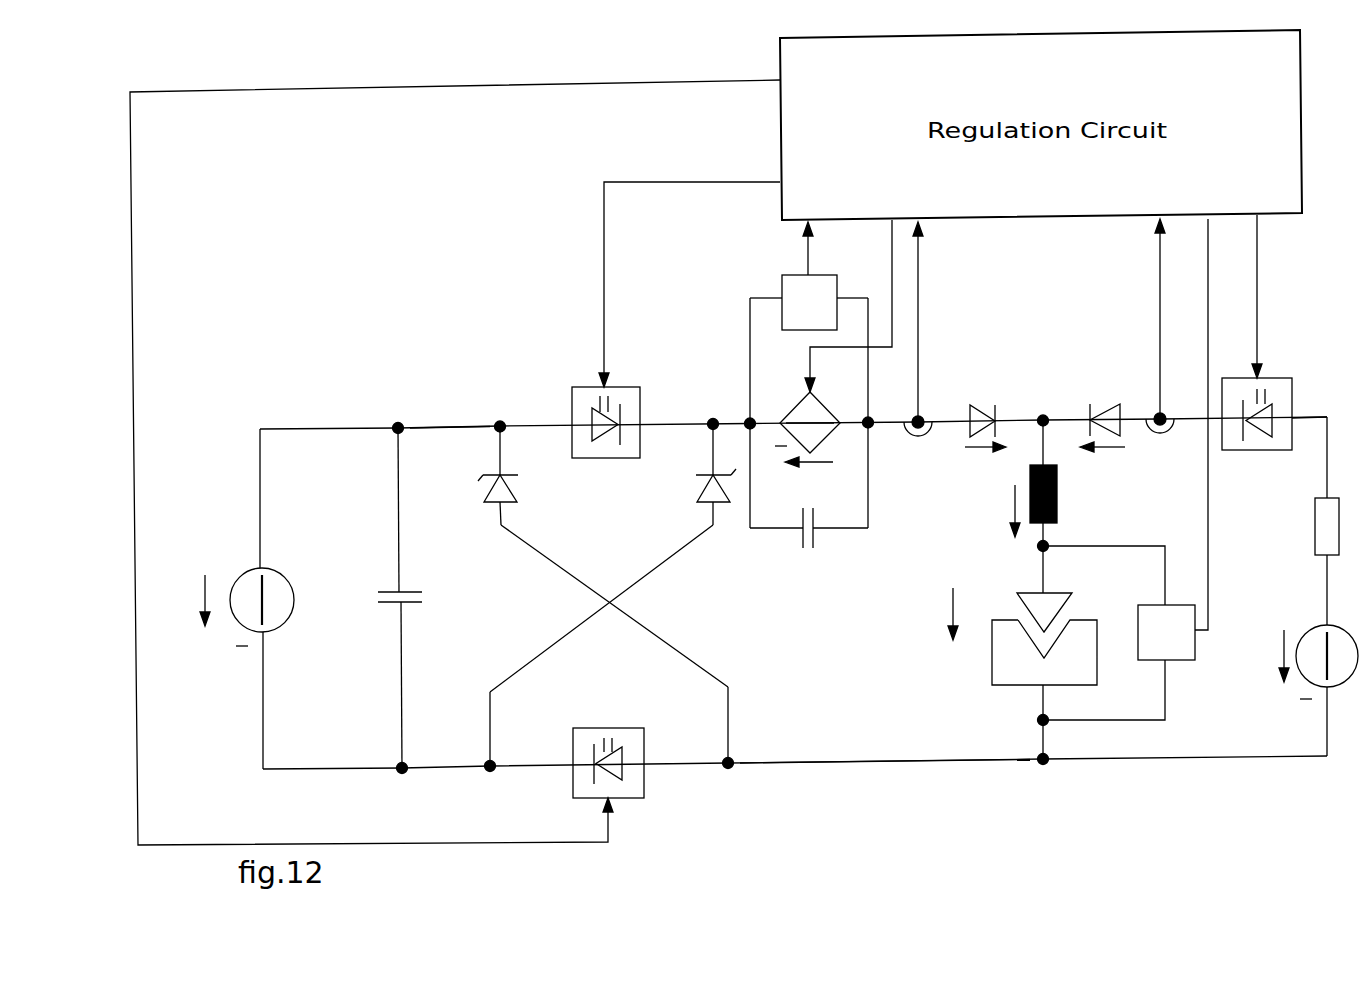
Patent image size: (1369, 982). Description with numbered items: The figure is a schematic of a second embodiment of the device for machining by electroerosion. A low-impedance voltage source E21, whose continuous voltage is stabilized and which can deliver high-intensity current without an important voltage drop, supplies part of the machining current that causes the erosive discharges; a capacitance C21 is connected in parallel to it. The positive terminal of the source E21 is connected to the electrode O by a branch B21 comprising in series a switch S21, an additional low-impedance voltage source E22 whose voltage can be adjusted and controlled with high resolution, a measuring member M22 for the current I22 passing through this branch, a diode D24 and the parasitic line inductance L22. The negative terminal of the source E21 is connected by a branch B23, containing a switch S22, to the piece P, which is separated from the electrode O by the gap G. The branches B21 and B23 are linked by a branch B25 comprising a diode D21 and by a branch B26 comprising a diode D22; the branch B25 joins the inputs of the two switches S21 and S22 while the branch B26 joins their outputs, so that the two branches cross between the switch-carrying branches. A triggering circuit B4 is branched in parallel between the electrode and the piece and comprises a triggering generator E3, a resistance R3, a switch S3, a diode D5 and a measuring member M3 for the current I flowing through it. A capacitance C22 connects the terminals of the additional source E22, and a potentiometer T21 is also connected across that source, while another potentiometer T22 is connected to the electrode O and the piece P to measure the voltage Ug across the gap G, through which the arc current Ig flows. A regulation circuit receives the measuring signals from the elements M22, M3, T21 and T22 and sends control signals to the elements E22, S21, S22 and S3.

The voltage source E21 is at (245, 597).
The capacitance C21 is at (391, 591).
The branch B21 is at (443, 420).
The branch B23 is at (825, 760).
The branch B25 is at (533, 547).
The branch B26 is at (653, 575).
The diode D21 is at (514, 496).
The diode D22 is at (706, 495).
The switch S21 is at (607, 447).
The switch S22 is at (587, 732).
The potentiometer T21 is at (809, 276).
The additional voltage source E22 is at (808, 407).
The capacitance C22 is at (815, 538).
The measuring member M22 is at (925, 414).
The diode D24 is at (980, 412).
The current I22 is at (985, 459).
The parasitic line inductance L22 is at (1059, 500).
The arc current Ig is at (1006, 511).
The diode D5 is at (1108, 410).
The current I is at (1102, 458).
The measuring member M3 is at (1163, 413).
The switch S3 is at (1256, 455).
The triggering circuit B4 is at (1308, 413).
The resistance R3 is at (1319, 518).
The triggering generator E3 is at (1318, 664).
The electrode O is at (1031, 605).
The gap G is at (1030, 632).
The piece P is at (1080, 658).
The voltage across the gap Ug is at (936, 614).
The potentiometer T22 is at (1125, 469).